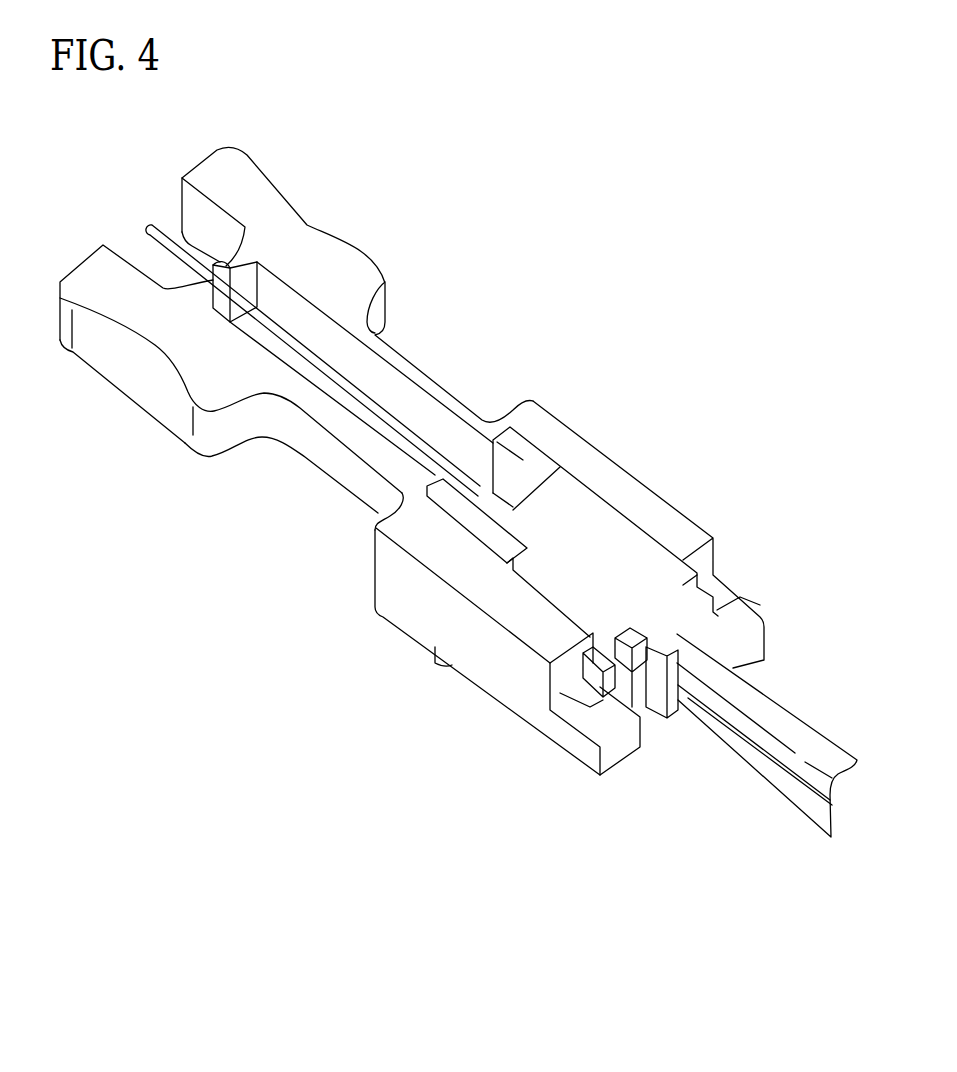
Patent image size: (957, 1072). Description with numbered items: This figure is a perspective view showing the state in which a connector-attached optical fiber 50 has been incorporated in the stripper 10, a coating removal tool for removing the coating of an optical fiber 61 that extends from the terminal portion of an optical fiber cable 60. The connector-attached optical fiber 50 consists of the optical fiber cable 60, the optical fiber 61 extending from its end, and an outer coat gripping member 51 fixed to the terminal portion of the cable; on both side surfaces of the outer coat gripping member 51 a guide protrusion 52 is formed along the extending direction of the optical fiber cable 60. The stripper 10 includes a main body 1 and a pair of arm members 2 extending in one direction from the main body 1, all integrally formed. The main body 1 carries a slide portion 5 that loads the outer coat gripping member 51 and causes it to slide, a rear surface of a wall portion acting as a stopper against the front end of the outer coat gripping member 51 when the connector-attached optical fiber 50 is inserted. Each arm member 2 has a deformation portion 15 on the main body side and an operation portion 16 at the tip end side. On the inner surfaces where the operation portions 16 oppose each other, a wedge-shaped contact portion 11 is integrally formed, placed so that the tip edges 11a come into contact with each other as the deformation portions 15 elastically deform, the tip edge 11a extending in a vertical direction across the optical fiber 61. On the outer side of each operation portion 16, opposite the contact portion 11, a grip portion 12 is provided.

The main body 1 is at (608, 787).
The arm member 2 is at (458, 379).
The slide portion 5 is at (510, 653).
The stripper 10 is at (481, 323).
The contact portion 11 is at (233, 263).
The tip edge 11a is at (215, 262).
The grip portion 12 is at (303, 221).
The deformation portion 15 is at (407, 373).
The operation portion 16 is at (317, 257).
The connector-attached optical fiber 50 is at (606, 503).
The outer coat gripping member 51 is at (634, 543).
The guide protrusion 52 is at (600, 682).
The optical fiber cable 60 is at (777, 723).
The optical fiber 61 is at (168, 226).